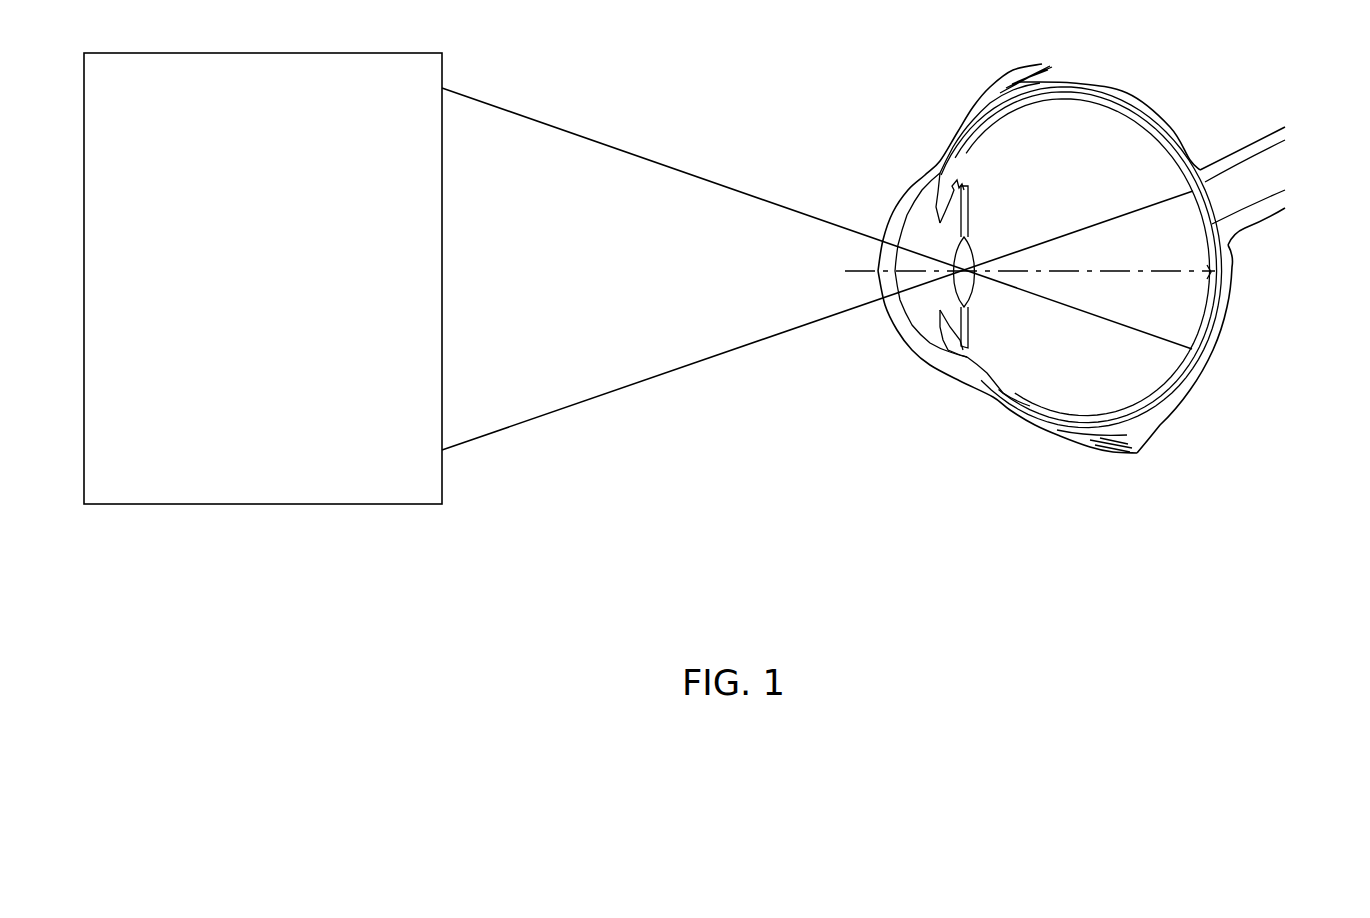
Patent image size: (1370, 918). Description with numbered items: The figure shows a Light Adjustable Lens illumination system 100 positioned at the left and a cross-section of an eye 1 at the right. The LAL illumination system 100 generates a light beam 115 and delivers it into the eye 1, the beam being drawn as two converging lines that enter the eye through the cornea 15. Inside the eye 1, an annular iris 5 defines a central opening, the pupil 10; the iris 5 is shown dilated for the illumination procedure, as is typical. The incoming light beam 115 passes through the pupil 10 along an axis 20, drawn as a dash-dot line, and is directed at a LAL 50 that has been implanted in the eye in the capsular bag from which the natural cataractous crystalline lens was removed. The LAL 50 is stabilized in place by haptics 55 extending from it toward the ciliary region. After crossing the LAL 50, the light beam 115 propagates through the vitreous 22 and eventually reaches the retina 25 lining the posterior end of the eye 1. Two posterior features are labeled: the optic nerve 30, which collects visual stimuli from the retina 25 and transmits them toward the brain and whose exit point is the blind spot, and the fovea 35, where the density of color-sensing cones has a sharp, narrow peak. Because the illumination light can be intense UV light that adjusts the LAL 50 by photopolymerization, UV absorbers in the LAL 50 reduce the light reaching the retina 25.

The eye 1 is at (1200, 53).
The iris 5 is at (938, 221).
The pupil 10 is at (942, 293).
The cornea 15 is at (885, 261).
The axis 20 is at (1135, 273).
The vitreous 22 is at (1081, 376).
The retina 25 is at (1168, 142).
The optic nerve 30 is at (1277, 186).
The fovea 35 is at (1211, 272).
The LAL 50 is at (973, 243).
The haptics 55 is at (966, 201).
The LAL illumination system 100 is at (263, 278).
The light beam 115 is at (817, 269).